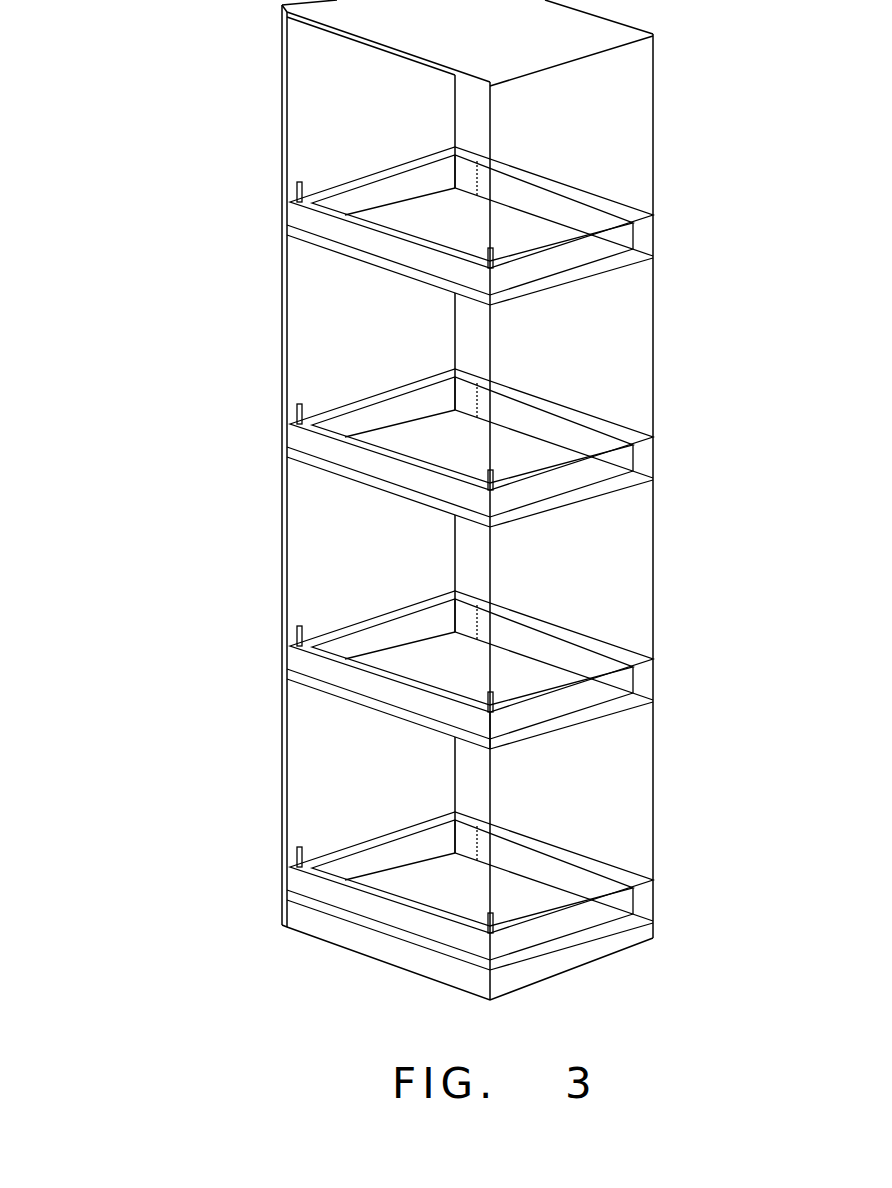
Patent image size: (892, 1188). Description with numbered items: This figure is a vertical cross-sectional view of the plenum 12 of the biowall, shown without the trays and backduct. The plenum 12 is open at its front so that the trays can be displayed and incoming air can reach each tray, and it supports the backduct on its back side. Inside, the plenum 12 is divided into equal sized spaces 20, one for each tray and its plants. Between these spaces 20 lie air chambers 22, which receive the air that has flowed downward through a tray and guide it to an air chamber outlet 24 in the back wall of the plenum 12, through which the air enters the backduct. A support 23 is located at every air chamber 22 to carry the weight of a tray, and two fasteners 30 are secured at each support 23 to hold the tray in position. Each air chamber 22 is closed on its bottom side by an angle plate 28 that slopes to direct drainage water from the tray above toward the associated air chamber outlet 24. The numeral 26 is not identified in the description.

The plenum 12 is at (185, 100).
The spaces 20 is at (415, 128).
The air chambers 22 is at (553, 263).
The supports 23 is at (347, 402).
The air chamber outlets 24 is at (570, 437).
The third tray 26 is at (375, 664).
The angle plate 28 is at (588, 712).
The fasteners 30 is at (497, 923).